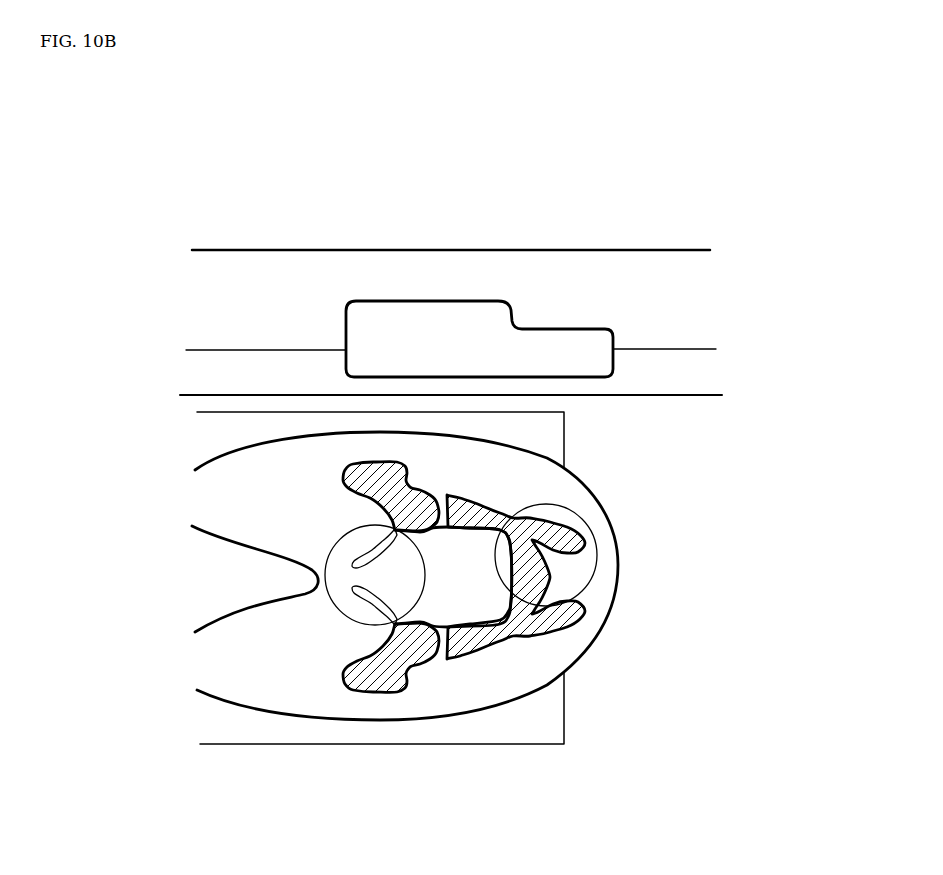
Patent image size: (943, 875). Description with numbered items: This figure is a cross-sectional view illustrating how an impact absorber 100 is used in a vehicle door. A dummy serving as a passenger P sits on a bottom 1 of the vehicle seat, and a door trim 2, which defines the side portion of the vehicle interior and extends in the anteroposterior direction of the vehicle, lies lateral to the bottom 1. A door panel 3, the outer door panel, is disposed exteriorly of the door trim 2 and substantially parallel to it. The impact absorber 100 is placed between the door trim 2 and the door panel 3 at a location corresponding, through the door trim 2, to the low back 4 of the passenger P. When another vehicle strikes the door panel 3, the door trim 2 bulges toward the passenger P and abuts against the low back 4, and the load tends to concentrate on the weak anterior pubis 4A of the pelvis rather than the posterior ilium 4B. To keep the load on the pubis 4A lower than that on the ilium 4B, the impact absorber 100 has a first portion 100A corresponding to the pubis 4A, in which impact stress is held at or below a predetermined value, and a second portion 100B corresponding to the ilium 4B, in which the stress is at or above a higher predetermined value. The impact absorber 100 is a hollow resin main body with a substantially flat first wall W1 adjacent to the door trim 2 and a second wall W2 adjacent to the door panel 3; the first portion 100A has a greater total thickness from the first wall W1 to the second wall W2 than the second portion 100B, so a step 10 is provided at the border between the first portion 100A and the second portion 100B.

The bottom 1 is at (303, 744).
The door trim 2 is at (697, 395).
The door panel 3 is at (678, 248).
The low back 4 is at (610, 520).
The pubis 4A is at (338, 603).
The ilium 4B is at (597, 560).
The step 10 is at (517, 316).
The impact absorber 100 is at (520, 272).
The first portion 100A is at (390, 310).
The second portion 100B is at (577, 340).
The first wall W1 is at (372, 378).
The second wall W2 is at (438, 302).
The passenger P is at (610, 638).